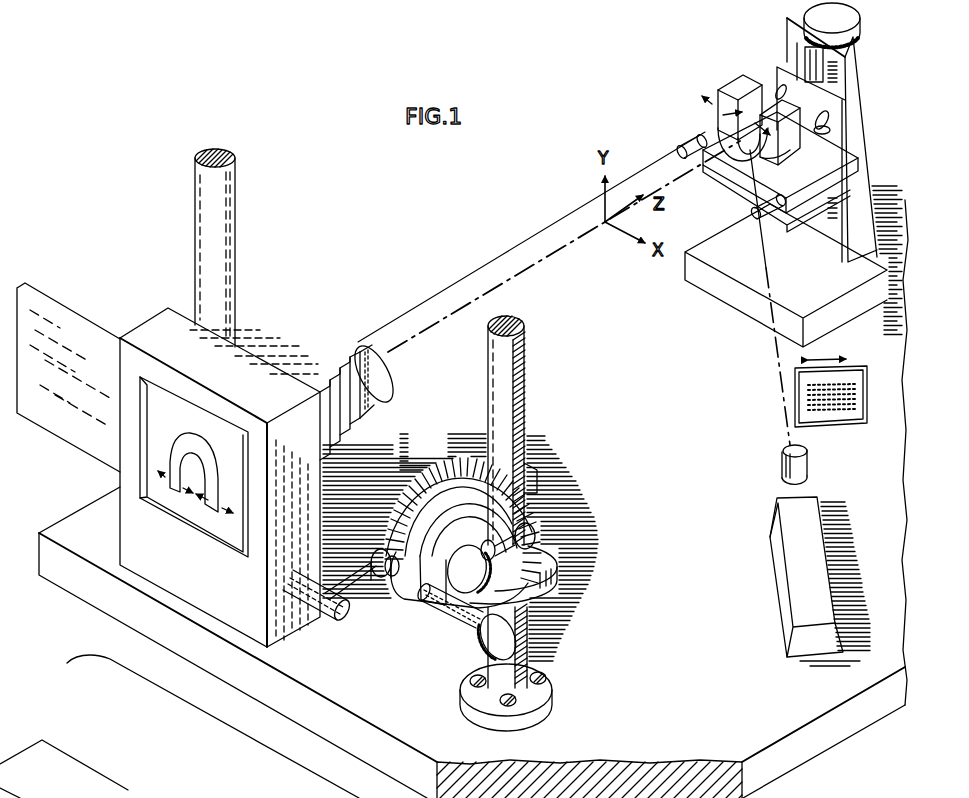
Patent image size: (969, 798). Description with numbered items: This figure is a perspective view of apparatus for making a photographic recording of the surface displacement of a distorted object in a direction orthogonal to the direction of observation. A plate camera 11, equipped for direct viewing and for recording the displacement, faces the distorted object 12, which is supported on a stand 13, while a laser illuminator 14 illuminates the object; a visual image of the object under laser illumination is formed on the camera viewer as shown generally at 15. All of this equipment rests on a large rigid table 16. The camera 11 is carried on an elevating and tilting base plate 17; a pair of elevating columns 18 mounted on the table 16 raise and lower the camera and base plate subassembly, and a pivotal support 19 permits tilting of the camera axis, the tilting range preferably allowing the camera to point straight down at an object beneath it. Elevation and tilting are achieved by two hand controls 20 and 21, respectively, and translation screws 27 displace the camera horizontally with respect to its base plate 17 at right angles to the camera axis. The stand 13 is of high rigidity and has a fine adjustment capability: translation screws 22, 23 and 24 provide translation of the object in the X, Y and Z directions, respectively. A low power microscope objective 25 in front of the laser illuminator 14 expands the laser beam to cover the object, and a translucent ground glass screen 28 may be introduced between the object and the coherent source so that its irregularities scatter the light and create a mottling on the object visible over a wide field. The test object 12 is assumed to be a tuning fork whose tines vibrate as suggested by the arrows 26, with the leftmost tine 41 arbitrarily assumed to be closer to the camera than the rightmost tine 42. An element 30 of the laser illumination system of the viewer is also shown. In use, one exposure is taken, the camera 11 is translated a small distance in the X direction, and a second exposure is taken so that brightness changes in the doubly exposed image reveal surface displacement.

The plate camera 11 is at (145, 322).
The distorted object 12 is at (740, 153).
The stand 13 is at (862, 192).
The laser illuminator 14 is at (777, 556).
The visual image of the object 15 is at (218, 476).
The rigid table 16 is at (87, 508).
The elevating and tilting base plate 17 is at (358, 587).
The elevating columns 18 is at (237, 166).
The pivotal support 19 is at (437, 457).
The hand control 20 is at (462, 578).
The hand control 21 is at (493, 638).
The translation screw 22 is at (680, 142).
The translation screw 23 is at (858, 20).
The translation screw 24 is at (768, 208).
The microscope objective 25 is at (777, 463).
The arrows 26 is at (740, 120).
The translation screws 27 is at (315, 607).
The translucent ground glass screen 28 is at (867, 375).
The laser illumination system element 30 is at (72, 773).
The leftmost tine 41 is at (740, 85).
The rightmost tine 42 is at (775, 110).